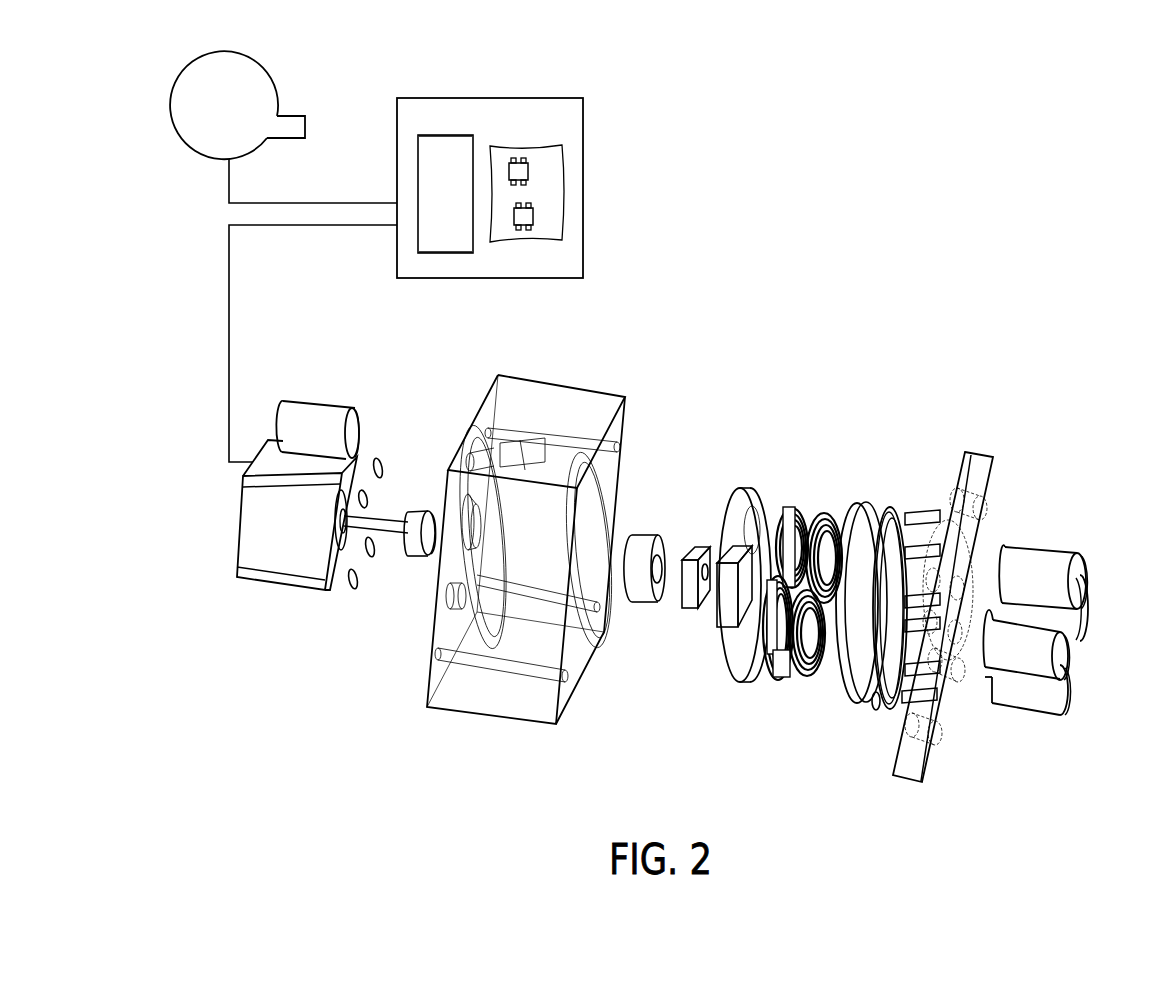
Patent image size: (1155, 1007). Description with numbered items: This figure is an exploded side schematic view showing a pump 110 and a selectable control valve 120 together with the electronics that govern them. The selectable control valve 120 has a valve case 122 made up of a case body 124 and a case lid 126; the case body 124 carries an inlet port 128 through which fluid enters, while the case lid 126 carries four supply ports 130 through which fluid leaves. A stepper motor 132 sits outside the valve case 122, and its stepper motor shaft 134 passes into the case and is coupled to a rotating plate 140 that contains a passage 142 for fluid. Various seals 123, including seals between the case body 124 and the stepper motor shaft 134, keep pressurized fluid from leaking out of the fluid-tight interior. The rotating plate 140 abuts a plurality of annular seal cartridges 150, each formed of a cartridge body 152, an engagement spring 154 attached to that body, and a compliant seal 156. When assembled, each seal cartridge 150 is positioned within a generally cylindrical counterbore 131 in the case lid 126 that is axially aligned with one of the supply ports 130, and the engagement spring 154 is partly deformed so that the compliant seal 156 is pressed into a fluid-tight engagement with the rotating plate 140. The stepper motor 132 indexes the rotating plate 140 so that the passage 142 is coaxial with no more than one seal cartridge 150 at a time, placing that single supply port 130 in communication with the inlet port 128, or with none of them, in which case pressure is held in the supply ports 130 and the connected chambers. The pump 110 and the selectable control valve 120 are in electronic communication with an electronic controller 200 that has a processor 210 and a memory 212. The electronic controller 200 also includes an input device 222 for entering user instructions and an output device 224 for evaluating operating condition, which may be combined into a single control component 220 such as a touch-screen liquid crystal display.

The pump 110 is at (268, 70).
The selectable control valve 120 is at (789, 521).
The valve case 122 is at (744, 538).
The seals 123 is at (382, 458).
The case body 124 is at (587, 387).
The case lid 126 is at (995, 468).
The inlet port 128 is at (300, 398).
The supply ports 130 is at (1063, 553).
The counterbore 131 is at (897, 520).
The stepper motor 132 is at (298, 493).
The stepper motor shaft 134 is at (393, 513).
The rotating plate 140 is at (739, 547).
The passage 142 is at (748, 517).
The seal cartridges 150 is at (802, 592).
The cartridge body 152 is at (806, 516).
The engagement spring 154 is at (860, 530).
The compliant seal 156 is at (795, 510).
The electronic controller 200 is at (483, 149).
The processor 210 is at (528, 170).
The memory 212 is at (528, 213).
The control component 220 is at (437, 128).
The input device 222 is at (432, 177).
The output device 224 is at (435, 230).